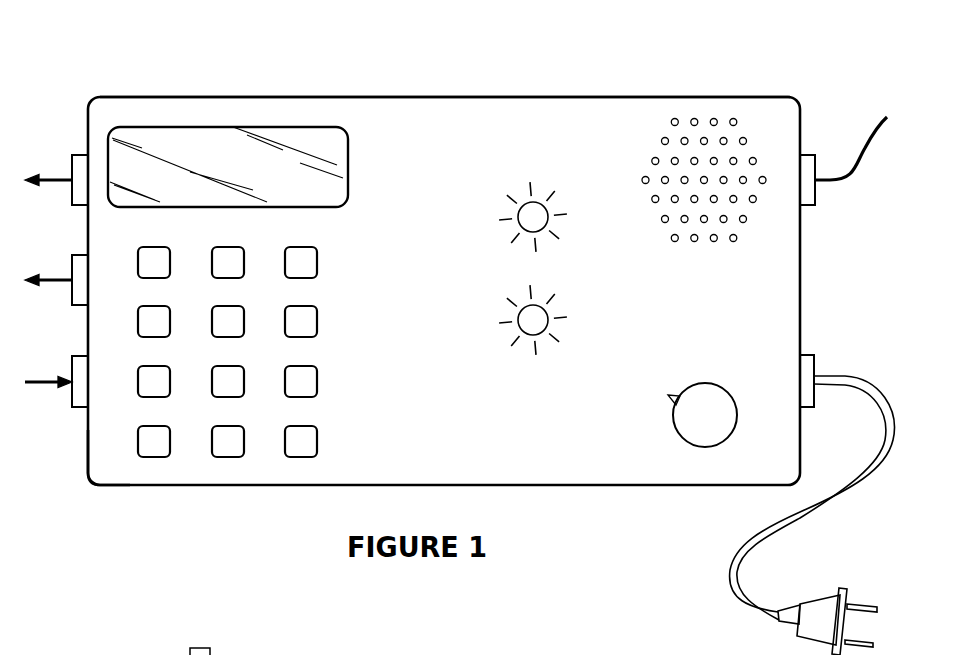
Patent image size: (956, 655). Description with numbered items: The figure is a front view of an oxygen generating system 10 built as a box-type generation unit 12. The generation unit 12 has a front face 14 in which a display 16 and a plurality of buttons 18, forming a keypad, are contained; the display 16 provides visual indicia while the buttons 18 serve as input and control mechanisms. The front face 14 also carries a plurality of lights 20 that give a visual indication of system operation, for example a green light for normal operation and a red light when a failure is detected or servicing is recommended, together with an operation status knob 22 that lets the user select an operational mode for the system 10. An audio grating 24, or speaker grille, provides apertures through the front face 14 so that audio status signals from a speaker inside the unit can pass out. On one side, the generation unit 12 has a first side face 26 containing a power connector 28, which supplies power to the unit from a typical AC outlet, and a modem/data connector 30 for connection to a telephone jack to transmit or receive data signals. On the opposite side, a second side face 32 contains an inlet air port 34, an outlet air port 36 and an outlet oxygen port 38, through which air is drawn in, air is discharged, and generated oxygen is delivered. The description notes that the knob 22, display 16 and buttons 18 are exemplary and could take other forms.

The oxygen generating system 10 is at (459, 332).
The generation unit 12 is at (358, 97).
The front face 14 is at (595, 117).
The display 16 is at (348, 165).
The buttons 18 is at (333, 257).
The lights 20 is at (570, 298).
The operation status knob 22 is at (672, 426).
The audio grating 24 is at (744, 248).
The first side face 26 is at (803, 118).
The power connector 28 is at (824, 363).
The modem/data connector 30 is at (829, 195).
The second side face 32 is at (86, 466).
The inlet air port 34 is at (70, 400).
The outlet air port 36 is at (70, 300).
The outlet oxygen port 38 is at (72, 158).